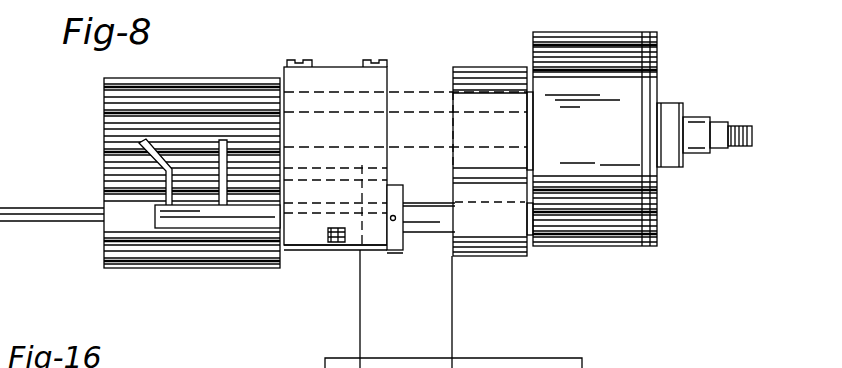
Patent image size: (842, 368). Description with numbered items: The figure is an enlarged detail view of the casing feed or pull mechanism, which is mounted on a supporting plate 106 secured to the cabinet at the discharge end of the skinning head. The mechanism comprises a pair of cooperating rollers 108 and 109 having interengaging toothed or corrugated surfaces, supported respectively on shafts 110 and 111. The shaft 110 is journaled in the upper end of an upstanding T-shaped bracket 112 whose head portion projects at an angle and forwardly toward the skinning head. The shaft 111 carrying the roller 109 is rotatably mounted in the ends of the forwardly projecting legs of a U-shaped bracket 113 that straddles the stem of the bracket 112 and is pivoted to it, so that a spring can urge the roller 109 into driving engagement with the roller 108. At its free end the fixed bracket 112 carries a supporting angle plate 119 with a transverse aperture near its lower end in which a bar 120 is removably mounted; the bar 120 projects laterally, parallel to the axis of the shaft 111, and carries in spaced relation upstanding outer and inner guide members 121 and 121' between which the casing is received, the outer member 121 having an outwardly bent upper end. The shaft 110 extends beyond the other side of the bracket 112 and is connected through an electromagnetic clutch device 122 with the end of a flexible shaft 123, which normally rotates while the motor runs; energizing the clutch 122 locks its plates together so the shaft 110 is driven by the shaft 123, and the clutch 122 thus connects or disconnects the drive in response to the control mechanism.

The supporting plate 106 is at (505, 358).
The roller 108 is at (104, 112).
The roller 109 is at (112, 240).
The shaft 110 is at (358, 112).
The shaft 111 is at (418, 235).
The T-shaped bracket 112 is at (452, 326).
The U-shaped bracket 113 is at (482, 256).
The supporting angle plate 119 is at (310, 242).
The bar 120 is at (245, 228).
The outer guide member 121 is at (139, 175).
The inner guide member 121' is at (306, 157).
The electromagnetic clutch device 122 is at (565, 240).
The flexible shaft 123 is at (740, 150).